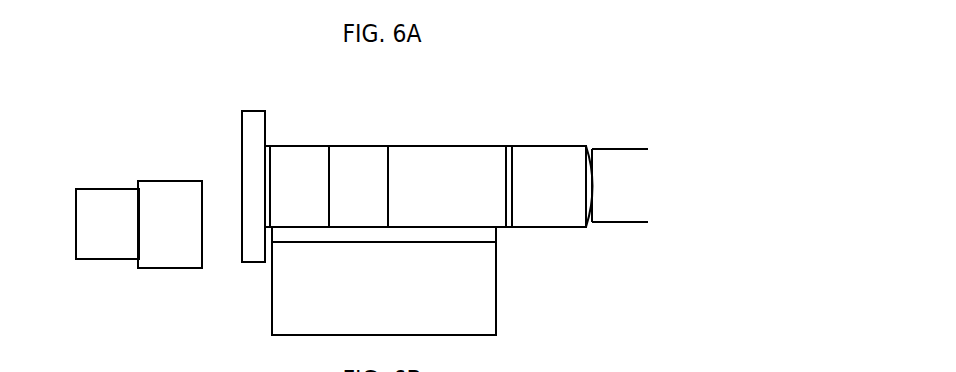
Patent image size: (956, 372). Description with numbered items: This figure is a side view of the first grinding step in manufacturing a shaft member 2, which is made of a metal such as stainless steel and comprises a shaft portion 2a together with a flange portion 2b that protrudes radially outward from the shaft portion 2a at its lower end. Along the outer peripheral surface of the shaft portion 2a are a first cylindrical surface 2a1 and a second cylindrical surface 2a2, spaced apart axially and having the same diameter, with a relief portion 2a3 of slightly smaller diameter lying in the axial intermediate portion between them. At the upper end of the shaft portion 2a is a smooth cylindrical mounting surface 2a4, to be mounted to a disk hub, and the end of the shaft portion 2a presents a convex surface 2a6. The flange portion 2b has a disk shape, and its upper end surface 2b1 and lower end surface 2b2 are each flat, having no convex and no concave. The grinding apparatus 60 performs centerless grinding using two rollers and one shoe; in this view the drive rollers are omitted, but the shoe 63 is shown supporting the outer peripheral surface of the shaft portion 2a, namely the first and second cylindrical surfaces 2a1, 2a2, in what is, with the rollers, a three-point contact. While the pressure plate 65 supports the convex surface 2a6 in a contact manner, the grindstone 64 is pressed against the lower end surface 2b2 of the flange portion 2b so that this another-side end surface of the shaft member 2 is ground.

The grinding apparatus 60 is at (208, 161).
The grindstone 64 is at (167, 255).
The shoe 63 is at (288, 307).
The pressure plate 65 is at (625, 160).
The shaft member 2 is at (490, 145).
The shaft portion 2a is at (418, 165).
The first cylindrical surface 2a1 is at (457, 143).
The second cylindrical surface 2a2 is at (310, 143).
The relief portion 2a3 is at (366, 143).
The mounting surface 2a4 is at (561, 143).
The convex surface 2a6 is at (593, 203).
The flange portion 2b is at (257, 122).
The upper end surface 2b1 is at (265, 123).
The lower end surface 2b2 is at (242, 132).